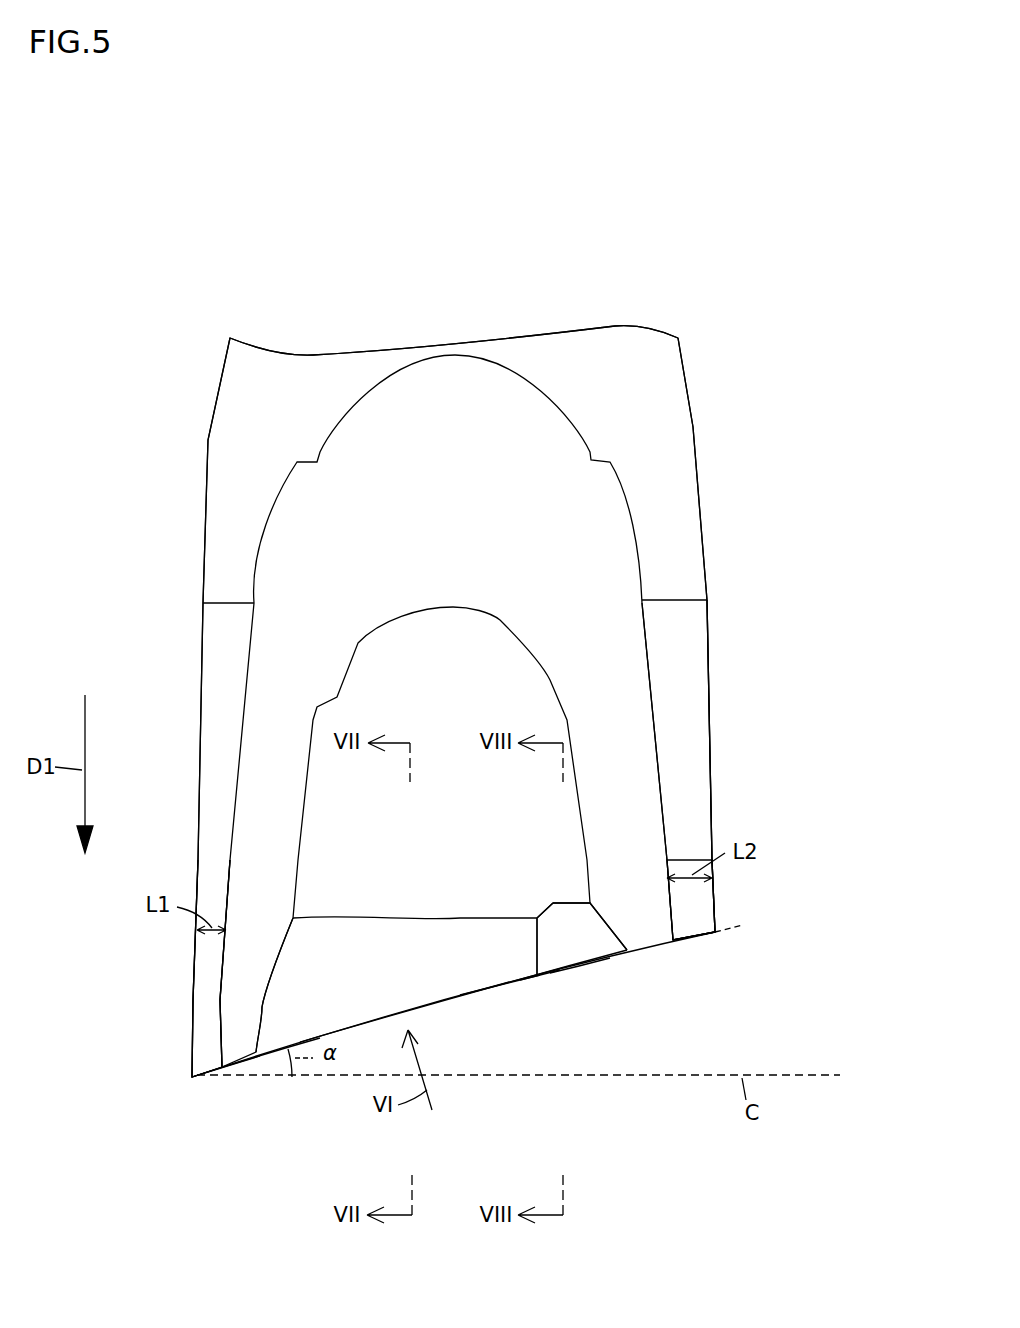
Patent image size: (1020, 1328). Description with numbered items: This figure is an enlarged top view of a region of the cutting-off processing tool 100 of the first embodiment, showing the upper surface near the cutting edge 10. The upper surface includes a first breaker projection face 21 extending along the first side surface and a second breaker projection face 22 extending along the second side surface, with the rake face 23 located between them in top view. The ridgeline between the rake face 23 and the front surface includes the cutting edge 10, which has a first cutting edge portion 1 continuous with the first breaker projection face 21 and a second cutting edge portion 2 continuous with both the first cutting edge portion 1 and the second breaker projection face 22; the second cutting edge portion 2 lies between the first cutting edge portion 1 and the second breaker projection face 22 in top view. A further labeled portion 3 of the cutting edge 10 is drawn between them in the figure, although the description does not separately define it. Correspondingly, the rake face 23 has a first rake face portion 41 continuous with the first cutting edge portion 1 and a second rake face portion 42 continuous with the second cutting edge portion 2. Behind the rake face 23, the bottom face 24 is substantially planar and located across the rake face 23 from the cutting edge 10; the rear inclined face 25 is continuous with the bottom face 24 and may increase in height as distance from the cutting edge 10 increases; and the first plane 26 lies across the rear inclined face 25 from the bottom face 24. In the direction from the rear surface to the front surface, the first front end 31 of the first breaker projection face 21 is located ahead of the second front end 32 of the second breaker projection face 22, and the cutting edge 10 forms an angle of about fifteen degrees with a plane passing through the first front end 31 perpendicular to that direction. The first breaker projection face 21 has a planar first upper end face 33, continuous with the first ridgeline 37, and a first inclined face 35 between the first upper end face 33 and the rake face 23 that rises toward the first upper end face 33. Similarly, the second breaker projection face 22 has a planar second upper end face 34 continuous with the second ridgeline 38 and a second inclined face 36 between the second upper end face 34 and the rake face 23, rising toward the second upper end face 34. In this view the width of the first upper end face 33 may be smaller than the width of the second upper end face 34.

The cutting-off processing tool 100 is at (720, 233).
The first plane 26 is at (650, 435).
The rear inclined face 25 is at (482, 520).
The bottom face 24 is at (447, 713).
The second ridgeline 38 is at (712, 792).
The first ridgeline 37 is at (202, 808).
The first breaker projection face 21 is at (103, 992).
The first front end 31 is at (192, 1077).
The first upper end face 33 is at (207, 1047).
The first inclined face 35 is at (237, 1018).
The second breaker projection face 22 is at (799, 870).
The second front end 32 is at (717, 932).
The second upper end face 34 is at (683, 920).
The second inclined face 36 is at (638, 897).
The rake face 23 is at (717, 980).
The first rake face portion 41 is at (460, 940).
The second rake face portion 42 is at (568, 932).
The cutting edge 10 is at (597, 1124).
The first cutting edge portion 1 is at (490, 987).
The third layer 3 is at (535, 972).
The second cutting edge portion 2 is at (567, 972).